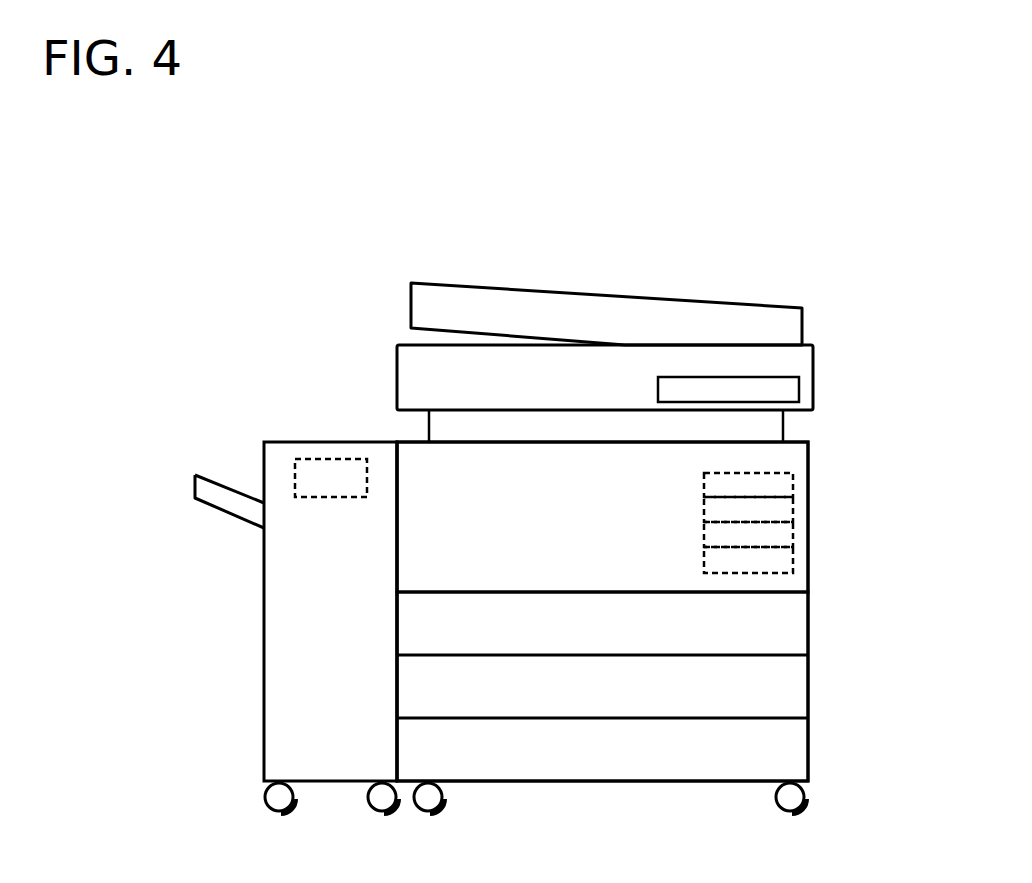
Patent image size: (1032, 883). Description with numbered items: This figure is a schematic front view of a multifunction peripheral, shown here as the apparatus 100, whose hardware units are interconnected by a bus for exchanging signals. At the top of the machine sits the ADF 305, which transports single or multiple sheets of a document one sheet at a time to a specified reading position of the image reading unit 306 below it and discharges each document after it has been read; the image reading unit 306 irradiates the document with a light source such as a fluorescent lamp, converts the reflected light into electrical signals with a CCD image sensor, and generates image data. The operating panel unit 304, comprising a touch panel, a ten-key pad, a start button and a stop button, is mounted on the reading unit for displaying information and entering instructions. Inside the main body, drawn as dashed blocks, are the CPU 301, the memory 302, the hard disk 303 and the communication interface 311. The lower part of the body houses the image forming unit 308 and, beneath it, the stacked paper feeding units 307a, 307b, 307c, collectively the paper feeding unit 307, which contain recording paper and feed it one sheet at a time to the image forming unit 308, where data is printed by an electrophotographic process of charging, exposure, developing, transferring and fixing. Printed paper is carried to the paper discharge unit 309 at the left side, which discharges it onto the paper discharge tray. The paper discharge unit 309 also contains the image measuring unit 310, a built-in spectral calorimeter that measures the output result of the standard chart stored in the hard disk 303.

The image forming apparatus 100 is at (486, 484).
The CPU 301 is at (801, 471).
The memory 302 is at (801, 504).
The hard disk 303 is at (801, 544).
The operating panel unit 304 is at (780, 380).
The ADF (Auto Document Feeder) 305 is at (606, 279).
The image reading unit 306 is at (555, 384).
The paper feeding unit 307 is at (602, 729).
The paper feeding unit 307a is at (602, 633).
The paper feeding unit 307b is at (602, 696).
The paper feeding unit 307c is at (583, 754).
The image forming unit 308 is at (602, 517).
The paper discharge unit 309 is at (277, 611).
The image measuring unit 310 is at (329, 433).
The communication interface 311 is at (801, 575).